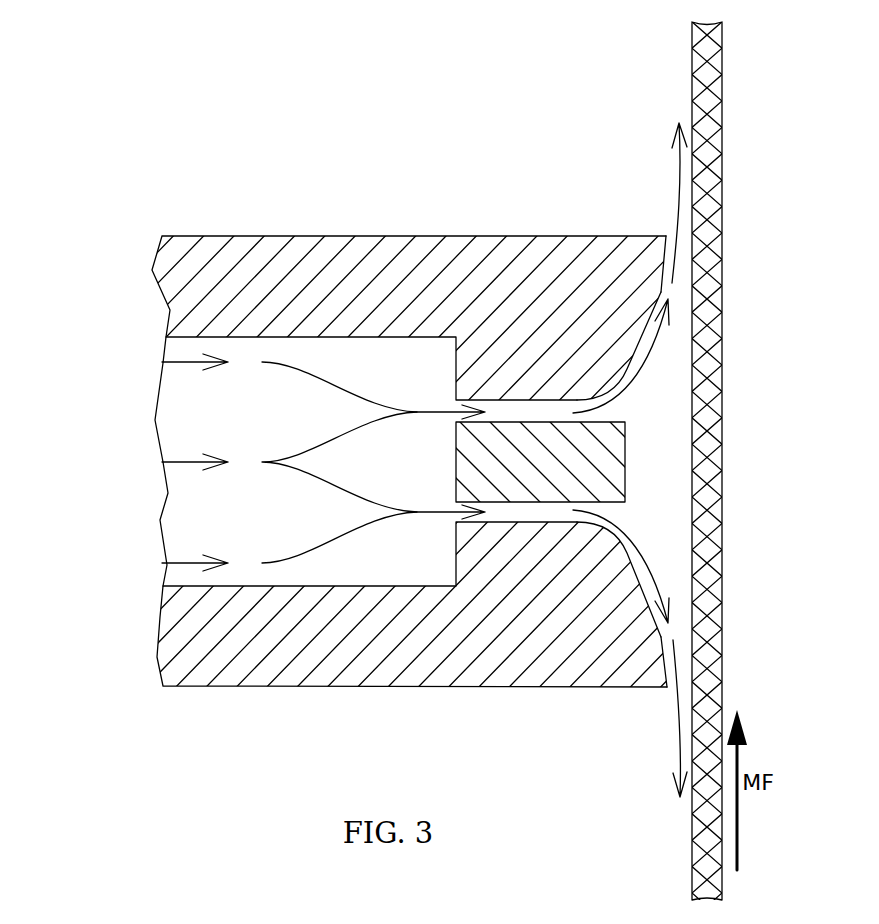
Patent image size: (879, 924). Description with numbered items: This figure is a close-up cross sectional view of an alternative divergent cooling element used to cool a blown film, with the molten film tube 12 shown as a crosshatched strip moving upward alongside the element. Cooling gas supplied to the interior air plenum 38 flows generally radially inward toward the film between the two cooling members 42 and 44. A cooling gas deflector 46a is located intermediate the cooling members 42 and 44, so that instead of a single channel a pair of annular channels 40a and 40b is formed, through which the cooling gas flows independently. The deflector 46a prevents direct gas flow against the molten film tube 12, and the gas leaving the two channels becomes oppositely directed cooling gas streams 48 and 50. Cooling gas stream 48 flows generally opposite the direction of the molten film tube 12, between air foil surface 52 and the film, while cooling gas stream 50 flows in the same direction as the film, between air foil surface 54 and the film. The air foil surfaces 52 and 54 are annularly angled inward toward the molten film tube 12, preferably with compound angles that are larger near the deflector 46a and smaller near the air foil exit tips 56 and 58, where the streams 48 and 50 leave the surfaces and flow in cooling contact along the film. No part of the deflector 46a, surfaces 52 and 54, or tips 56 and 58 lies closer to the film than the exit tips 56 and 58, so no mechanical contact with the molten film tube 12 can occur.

The molten film tube 12 is at (723, 148).
The interior air plenum 38 is at (155, 420).
The annular channel 40a is at (538, 515).
The annular channel 40b is at (538, 408).
The cooling member 42 is at (362, 658).
The cooling member 44 is at (353, 252).
The cooling gas deflector 46a is at (593, 460).
The cooling gas stream 48 is at (680, 753).
The cooling gas stream 50 is at (680, 173).
The air foil surface 52 is at (663, 633).
The air foil surface 54 is at (663, 287).
The air foil exit tip 56 is at (666, 688).
The air foil exit tip 58 is at (666, 235).